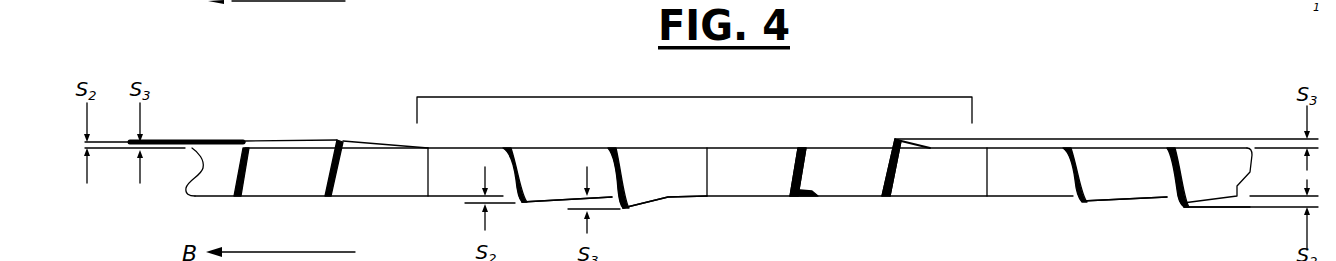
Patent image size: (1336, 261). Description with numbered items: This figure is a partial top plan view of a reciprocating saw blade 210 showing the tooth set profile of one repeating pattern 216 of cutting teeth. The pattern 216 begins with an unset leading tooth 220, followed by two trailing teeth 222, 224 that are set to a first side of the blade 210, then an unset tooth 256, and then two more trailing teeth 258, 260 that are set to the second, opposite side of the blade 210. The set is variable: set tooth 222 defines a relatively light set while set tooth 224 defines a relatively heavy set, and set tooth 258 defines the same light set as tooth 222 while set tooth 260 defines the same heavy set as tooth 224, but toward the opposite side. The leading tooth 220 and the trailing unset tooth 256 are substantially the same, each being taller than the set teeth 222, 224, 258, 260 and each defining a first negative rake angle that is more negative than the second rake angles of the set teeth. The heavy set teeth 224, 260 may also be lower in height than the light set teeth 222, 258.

The blade 210 is at (1128, 107).
The repeating pattern 216 is at (850, 97).
The leading tooth 220 is at (440, 173).
The trailing tooth 222 is at (527, 178).
The trailing tooth 224 is at (625, 180).
The unset tooth 256 is at (715, 168).
The trailing tooth 258 is at (252, 170).
The trailing tooth 260 is at (345, 170).